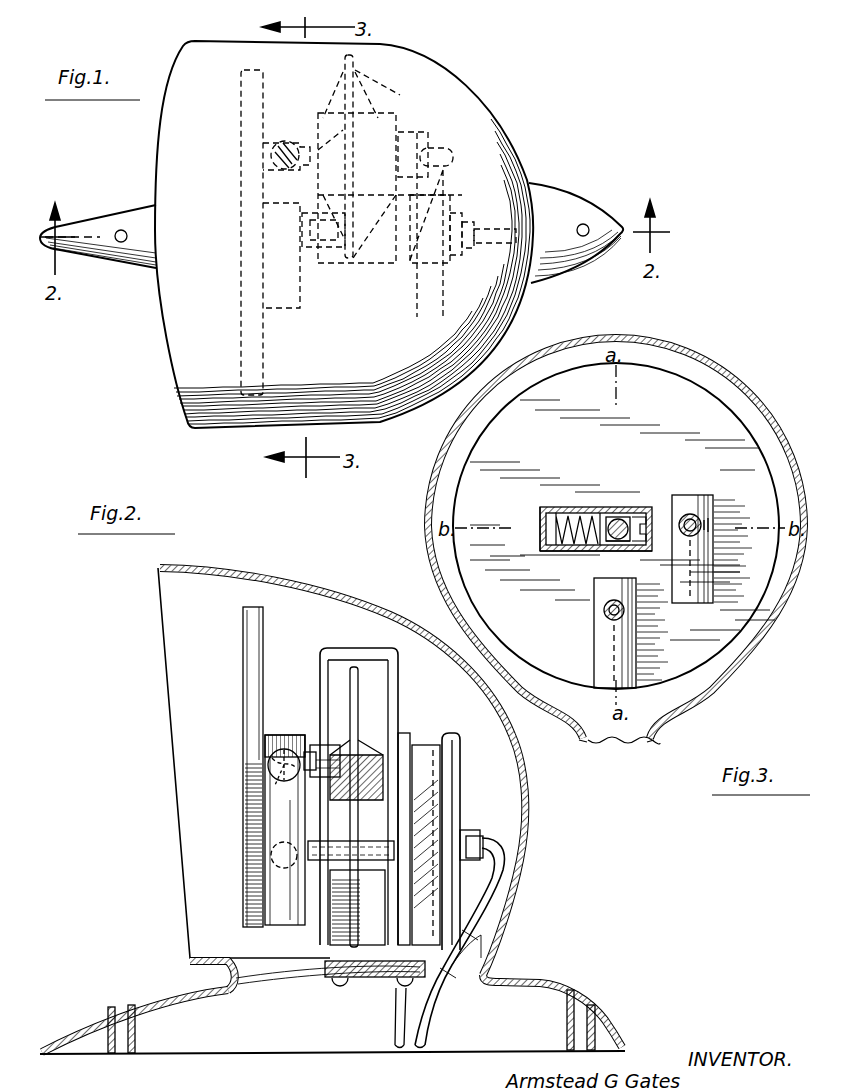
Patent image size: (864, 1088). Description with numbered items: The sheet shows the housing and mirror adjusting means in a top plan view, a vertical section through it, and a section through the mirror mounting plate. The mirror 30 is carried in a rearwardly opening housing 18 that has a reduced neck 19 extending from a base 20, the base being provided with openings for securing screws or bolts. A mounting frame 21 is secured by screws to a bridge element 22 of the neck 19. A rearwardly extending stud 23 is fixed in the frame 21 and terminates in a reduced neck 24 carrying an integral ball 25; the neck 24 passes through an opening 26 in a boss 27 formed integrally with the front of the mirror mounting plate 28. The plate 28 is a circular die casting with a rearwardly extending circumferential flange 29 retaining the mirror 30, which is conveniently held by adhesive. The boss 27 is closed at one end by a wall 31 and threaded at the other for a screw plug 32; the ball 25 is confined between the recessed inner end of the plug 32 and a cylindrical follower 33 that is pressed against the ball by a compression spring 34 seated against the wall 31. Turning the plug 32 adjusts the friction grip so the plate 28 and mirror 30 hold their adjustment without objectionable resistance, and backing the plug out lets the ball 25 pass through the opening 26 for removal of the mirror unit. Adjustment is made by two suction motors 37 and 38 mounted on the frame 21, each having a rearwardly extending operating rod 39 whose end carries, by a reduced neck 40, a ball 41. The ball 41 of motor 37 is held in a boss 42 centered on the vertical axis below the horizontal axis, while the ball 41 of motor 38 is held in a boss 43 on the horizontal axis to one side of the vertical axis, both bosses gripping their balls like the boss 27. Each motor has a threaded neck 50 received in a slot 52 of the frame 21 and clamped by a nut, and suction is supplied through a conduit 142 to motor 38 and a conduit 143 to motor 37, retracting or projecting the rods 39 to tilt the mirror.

In FIG. 1, the housing 18 is at (497, 136).
In FIG. 3, the housing 18 is at (676, 345).
In FIG. 2, the housing 18 is at (528, 800).
In FIG. 3, the neck 19 is at (658, 742).
In FIG. 2, the neck 19 is at (486, 976).
In FIG. 1, the base 20 is at (568, 200).
In FIG. 2, the base 20 is at (608, 1028).
In FIG. 1, the mounting frame 21 is at (365, 264).
In FIG. 2, the mounting frame 21 is at (356, 648).
In FIG. 2, the bridge element 22 is at (378, 980).
In FIG. 1, the stud 23 is at (340, 265).
In FIG. 2, the stud 23 is at (346, 765).
In FIG. 3, the reduced neck 24 is at (612, 552).
In FIG. 2, the reduced neck 24 is at (312, 744).
In FIG. 3, the ball 25 is at (618, 518).
In FIG. 2, the ball 25 is at (275, 790).
In FIG. 2, the opening 26 is at (265, 770).
In FIG. 1, the boss 27 is at (300, 308).
In FIG. 3, the boss 27 is at (548, 507).
In FIG. 2, the boss 27 is at (270, 757).
In FIG. 1, the mirror mounting plate 28 is at (263, 352).
In FIG. 3, the mirror mounting plate 28 is at (692, 455).
In FIG. 2, the mirror mounting plate 28 is at (246, 690).
In FIG. 2, the circumferential flange 29 is at (244, 652).
In FIG. 1, the mirror 30 is at (240, 203).
In FIG. 2, the mirror 30 is at (243, 825).
In FIG. 3, the wall 31 is at (542, 524).
In FIG. 3, the screw plug 32 is at (644, 514).
In FIG. 3, the cylindrical follower 33 is at (600, 510).
In FIG. 3, the compression spring 34 is at (560, 553).
In FIG. 1, the suction motor 37 is at (437, 291).
In FIG. 2, the suction motor 37 is at (440, 805).
In FIG. 1, the suction motor 38 is at (370, 101).
In FIG. 2, the suction motor 38 is at (380, 712).
In FIG. 1, the operating rod 39 is at (345, 140).
In FIG. 2, the operating rod 39 is at (376, 862).
In FIG. 3, the reduced neck 40 is at (715, 540).
In FIG. 3, the ball 41 is at (698, 522).
In FIG. 2, the ball 41 is at (262, 866).
In FIG. 3, the boss 42 is at (604, 655).
In FIG. 2, the boss 42 is at (283, 890).
In FIG. 1, the boss 43 is at (282, 141).
In FIG. 3, the boss 43 is at (714, 566).
In FIG. 2, the neck 50 is at (490, 842).
In FIG. 2, the slot 52 is at (466, 832).
In FIG. 2, the conduit 142 is at (392, 1018).
In FIG. 2, the conduit 143 is at (432, 1022).